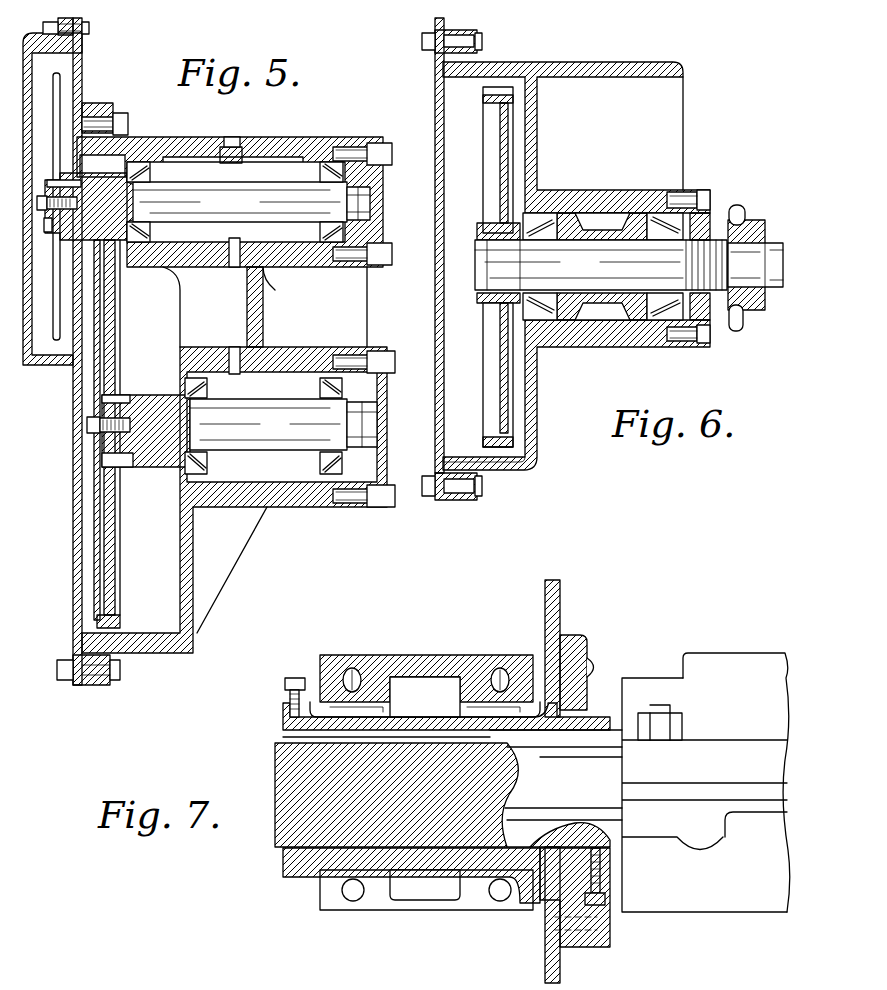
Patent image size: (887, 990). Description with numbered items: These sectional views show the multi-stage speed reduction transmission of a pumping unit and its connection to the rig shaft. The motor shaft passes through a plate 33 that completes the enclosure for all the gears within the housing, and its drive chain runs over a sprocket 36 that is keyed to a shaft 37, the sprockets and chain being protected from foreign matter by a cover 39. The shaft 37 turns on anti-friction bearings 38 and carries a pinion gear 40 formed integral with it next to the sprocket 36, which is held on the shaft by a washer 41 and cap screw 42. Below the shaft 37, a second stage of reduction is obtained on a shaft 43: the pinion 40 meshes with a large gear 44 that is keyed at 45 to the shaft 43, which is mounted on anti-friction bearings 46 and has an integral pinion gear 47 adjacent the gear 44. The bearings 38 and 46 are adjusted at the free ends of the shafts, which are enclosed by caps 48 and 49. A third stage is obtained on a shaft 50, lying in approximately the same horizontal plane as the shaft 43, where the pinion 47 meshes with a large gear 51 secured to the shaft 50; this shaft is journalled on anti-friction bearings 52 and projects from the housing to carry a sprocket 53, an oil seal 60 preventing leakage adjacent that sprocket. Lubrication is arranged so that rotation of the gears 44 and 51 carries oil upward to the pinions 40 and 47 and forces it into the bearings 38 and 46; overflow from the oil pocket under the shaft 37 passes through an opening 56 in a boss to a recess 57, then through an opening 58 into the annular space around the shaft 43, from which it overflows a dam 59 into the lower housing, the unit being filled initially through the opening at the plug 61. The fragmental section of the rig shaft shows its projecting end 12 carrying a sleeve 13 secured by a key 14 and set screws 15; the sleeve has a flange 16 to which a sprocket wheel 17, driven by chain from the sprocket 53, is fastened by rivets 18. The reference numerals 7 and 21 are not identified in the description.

In FIG. 7, the gear housing 7 is at (622, 758).
In FIG. 7, the projecting end 12 is at (275, 835).
In FIG. 7, the sleeve 13 is at (290, 862).
In FIG. 7, the key 14 is at (283, 735).
In FIG. 7, the set screws 15 is at (294, 678).
In FIG. 7, the flange 16 is at (587, 640).
In FIG. 7, the sprocket wheel 17 is at (560, 610).
In FIG. 7, the rivets 18 is at (597, 666).
In FIG. 7, the bracket 21 is at (445, 668).
In FIG. 5, the plate 33 is at (73, 470).
In FIG. 6, the plate 33 is at (435, 84).
In FIG. 5, the sprocket 36 is at (60, 82).
In FIG. 5, the shaft 37 is at (195, 182).
In FIG. 5, the anti-friction bearings 38 is at (140, 162).
In FIG. 5, the cover 39 is at (36, 48).
In FIG. 5, the pinion gear 40 is at (100, 180).
In FIG. 5, the washer 41 is at (44, 224).
In FIG. 5, the cap screw 42 is at (37, 198).
In FIG. 5, the shaft 43 is at (258, 410).
In FIG. 5, the large gear 44 is at (115, 300).
In FIG. 5, the key 45 is at (120, 398).
In FIG. 5, the anti-friction bearings 46 is at (200, 378).
In FIG. 5, the pinion gear 47 is at (155, 468).
In FIG. 5, the cap 48 is at (383, 185).
In FIG. 5, the cap 49 is at (390, 400).
In FIG. 6, the shaft 50 is at (629, 239).
In FIG. 6, the large gear 51 is at (490, 129).
In FIG. 6, the anti-friction bearings 52 is at (548, 213).
In FIG. 6, the sprocket 53 is at (750, 225).
In FIG. 5, the opening 56 is at (240, 242).
In FIG. 5, the recess 57 is at (263, 300).
In FIG. 5, the opening 58 is at (240, 355).
In FIG. 5, the dam 59 is at (218, 462).
In FIG. 6, the oil seal 60 is at (712, 215).
In FIG. 5, the plug 61 is at (238, 136).